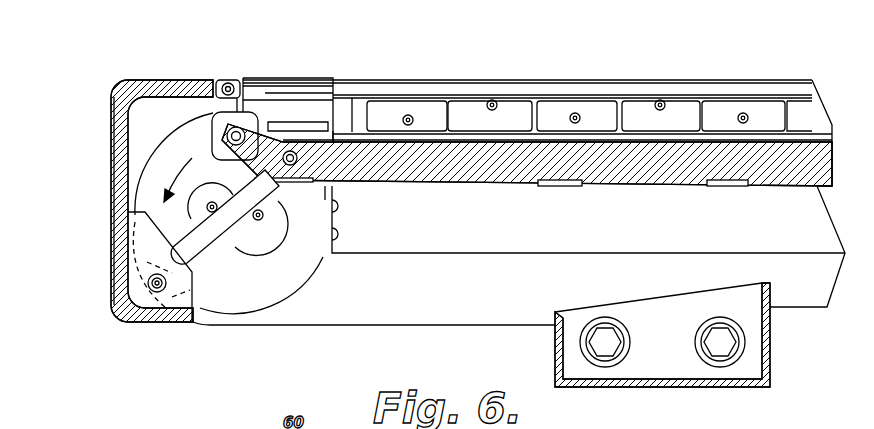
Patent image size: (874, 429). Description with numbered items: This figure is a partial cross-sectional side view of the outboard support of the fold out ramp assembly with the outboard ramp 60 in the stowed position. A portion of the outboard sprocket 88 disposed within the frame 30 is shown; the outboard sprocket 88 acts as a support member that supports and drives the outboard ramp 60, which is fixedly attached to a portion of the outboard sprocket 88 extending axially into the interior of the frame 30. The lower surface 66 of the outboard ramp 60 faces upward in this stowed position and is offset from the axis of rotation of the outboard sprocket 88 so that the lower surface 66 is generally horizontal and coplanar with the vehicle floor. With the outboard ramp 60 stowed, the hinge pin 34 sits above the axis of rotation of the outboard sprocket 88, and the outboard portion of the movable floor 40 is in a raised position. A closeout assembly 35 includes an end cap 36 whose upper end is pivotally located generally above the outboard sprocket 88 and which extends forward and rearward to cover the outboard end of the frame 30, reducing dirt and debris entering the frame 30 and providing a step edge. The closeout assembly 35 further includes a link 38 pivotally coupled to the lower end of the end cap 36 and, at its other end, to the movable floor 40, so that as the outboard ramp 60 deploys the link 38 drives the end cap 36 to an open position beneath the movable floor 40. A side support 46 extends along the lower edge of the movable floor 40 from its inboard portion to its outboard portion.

The frame 30 is at (800, 300).
The hinge pin 34 is at (233, 131).
The closeout assembly 35 is at (92, 141).
The end cap 36 is at (112, 168).
The link 38 is at (190, 240).
The movable floor 40 is at (712, 137).
The side support 46 is at (630, 147).
The outboard ramp 60 is at (542, 107).
The lower surface 66 is at (502, 82).
The outboard sprocket 88 is at (243, 253).